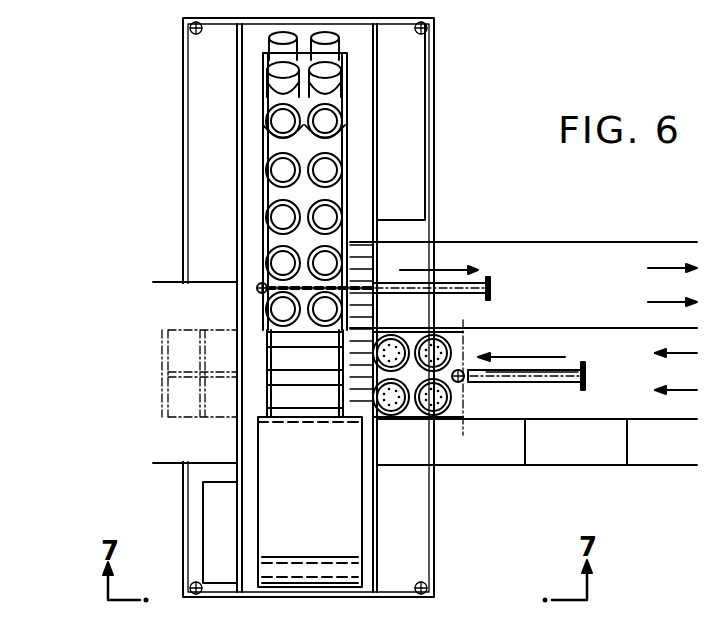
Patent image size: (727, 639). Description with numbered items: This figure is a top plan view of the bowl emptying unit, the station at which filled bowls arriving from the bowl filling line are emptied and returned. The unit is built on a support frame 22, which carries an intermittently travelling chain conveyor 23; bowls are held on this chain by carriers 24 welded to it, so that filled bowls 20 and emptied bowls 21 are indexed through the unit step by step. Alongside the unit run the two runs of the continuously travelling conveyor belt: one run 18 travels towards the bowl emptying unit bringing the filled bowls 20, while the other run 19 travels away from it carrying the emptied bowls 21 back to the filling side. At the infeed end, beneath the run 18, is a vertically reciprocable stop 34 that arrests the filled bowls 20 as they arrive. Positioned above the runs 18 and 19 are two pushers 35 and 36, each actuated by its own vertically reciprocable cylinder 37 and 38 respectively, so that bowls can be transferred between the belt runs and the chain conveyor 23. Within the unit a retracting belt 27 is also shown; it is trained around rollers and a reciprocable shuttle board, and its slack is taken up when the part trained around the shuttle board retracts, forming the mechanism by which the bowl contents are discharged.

The run 18 is at (628, 400).
The run 19 is at (600, 270).
The filled bowls 20 is at (447, 417).
The emptied bowls 21 is at (272, 258).
The support frame 22 is at (378, 528).
The chain conveyor 23 is at (343, 142).
The carriers 24 is at (343, 80).
The retracting belt 27 is at (277, 457).
The stop 34 is at (368, 422).
The pusher 35 is at (535, 377).
The pusher 36 is at (443, 287).
The cylinder 37 is at (466, 381).
The cylinder 38 is at (258, 289).